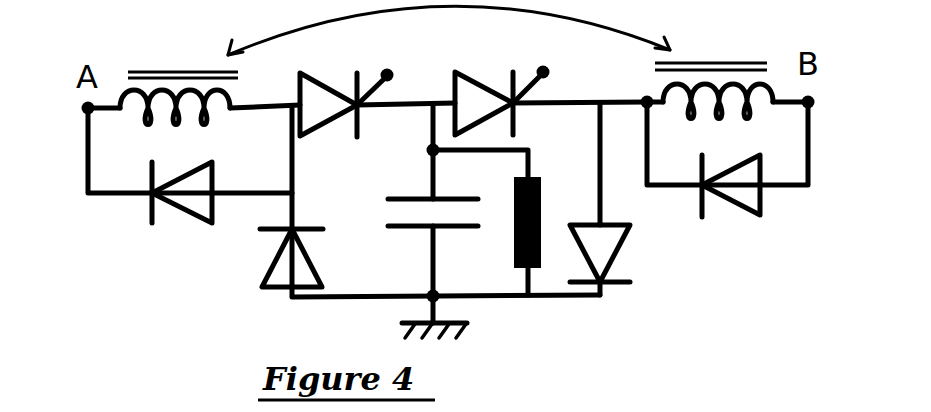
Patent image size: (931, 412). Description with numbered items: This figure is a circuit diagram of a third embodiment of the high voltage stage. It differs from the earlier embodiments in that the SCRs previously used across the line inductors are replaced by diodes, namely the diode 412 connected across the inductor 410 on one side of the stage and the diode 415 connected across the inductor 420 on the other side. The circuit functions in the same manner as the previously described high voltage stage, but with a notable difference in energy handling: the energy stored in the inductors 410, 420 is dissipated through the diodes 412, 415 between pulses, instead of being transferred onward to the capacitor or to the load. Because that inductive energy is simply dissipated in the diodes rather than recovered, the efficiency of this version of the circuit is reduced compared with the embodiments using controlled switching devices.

The inductor 410 is at (179, 74).
The diode 412 is at (164, 215).
The diode 415 is at (736, 208).
The inductor 420 is at (714, 72).